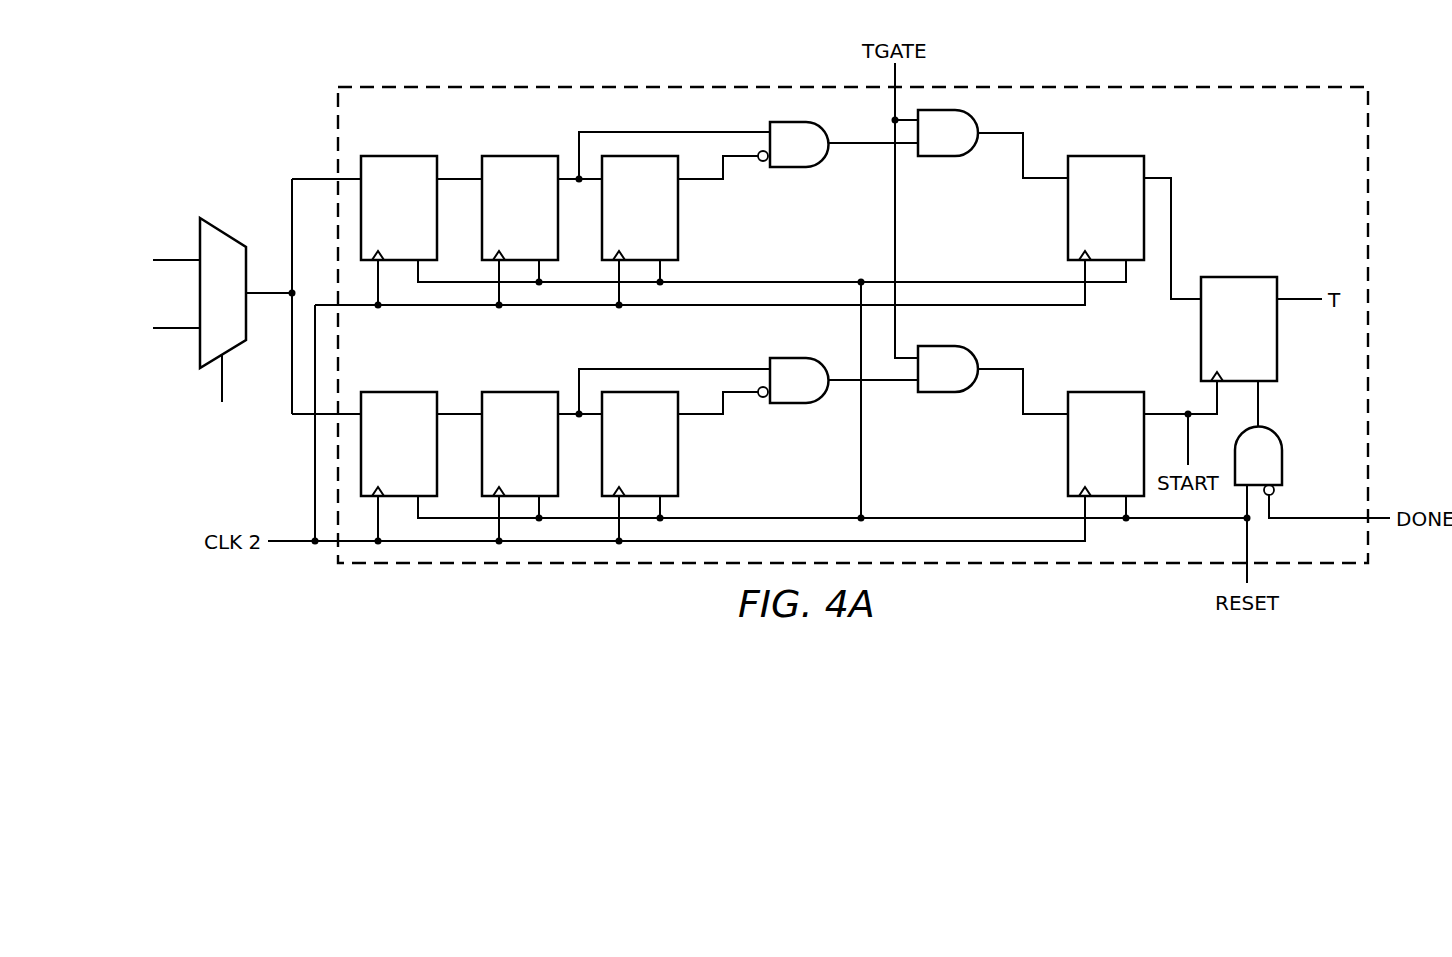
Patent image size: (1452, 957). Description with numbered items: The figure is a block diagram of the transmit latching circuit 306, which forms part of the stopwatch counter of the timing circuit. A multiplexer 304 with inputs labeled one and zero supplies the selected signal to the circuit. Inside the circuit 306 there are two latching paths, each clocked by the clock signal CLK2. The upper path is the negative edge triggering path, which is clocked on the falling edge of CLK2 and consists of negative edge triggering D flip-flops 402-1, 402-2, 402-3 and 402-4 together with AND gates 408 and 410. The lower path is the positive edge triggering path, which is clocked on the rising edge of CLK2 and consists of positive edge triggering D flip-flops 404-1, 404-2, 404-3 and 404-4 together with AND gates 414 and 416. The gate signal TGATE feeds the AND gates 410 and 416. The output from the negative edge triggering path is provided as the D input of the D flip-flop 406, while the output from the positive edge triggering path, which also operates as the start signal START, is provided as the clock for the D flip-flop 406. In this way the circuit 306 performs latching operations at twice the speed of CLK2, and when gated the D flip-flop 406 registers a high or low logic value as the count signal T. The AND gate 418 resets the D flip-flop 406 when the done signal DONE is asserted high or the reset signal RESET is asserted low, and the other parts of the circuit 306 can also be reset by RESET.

The multiplexer 304 is at (200, 232).
The transmit latching circuit 306 is at (1291, 86).
The negative edge triggering D flip-flop 402-1 is at (408, 156).
The negative edge triggering D flip-flop 402-2 is at (529, 156).
The negative edge triggering D flip-flop 402-3 is at (678, 228).
The negative edge triggering D flip-flop 402-4 is at (1068, 228).
The positive edge triggering D flip-flop 404-1 is at (408, 392).
The positive edge triggering D flip-flop 404-2 is at (529, 392).
The positive edge triggering D flip-flop 404-3 is at (678, 464).
The positive edge triggering D flip-flop 404-4 is at (1068, 464).
The D flip-flop 406 is at (1240, 277).
The AND gate 408 is at (792, 167).
The AND gate 410 is at (941, 156).
The AND gate 414 is at (792, 403).
The AND gate 416 is at (941, 392).
The AND gate 418 is at (1282, 462).